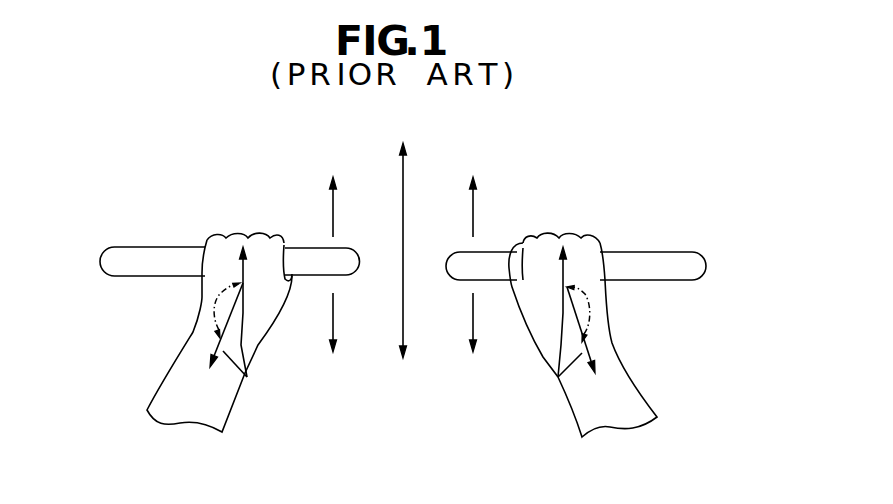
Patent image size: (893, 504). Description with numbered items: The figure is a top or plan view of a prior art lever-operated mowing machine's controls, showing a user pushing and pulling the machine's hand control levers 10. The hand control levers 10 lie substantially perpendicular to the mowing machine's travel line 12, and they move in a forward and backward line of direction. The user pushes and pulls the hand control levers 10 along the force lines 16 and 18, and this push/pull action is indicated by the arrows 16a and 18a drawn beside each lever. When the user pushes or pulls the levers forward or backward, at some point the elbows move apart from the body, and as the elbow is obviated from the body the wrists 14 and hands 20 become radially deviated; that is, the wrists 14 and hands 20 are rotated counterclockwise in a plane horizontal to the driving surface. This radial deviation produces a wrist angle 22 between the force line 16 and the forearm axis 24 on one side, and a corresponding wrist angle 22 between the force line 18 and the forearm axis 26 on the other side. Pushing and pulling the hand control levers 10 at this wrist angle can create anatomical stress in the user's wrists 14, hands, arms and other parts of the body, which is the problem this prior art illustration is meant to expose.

The hand control lever 10 is at (125, 237).
The travel line 12 is at (425, 325).
The wrist 14 is at (172, 353).
The force line 16 is at (243, 277).
The push/pull arrows 16a is at (325, 208).
The force line 18 is at (563, 277).
The push/pull arrows 18a is at (481, 208).
The hand 20 is at (200, 237).
The wrist angle 22 is at (216, 300).
The forearm axis 24 is at (247, 377).
The forearm axis 26 is at (558, 377).